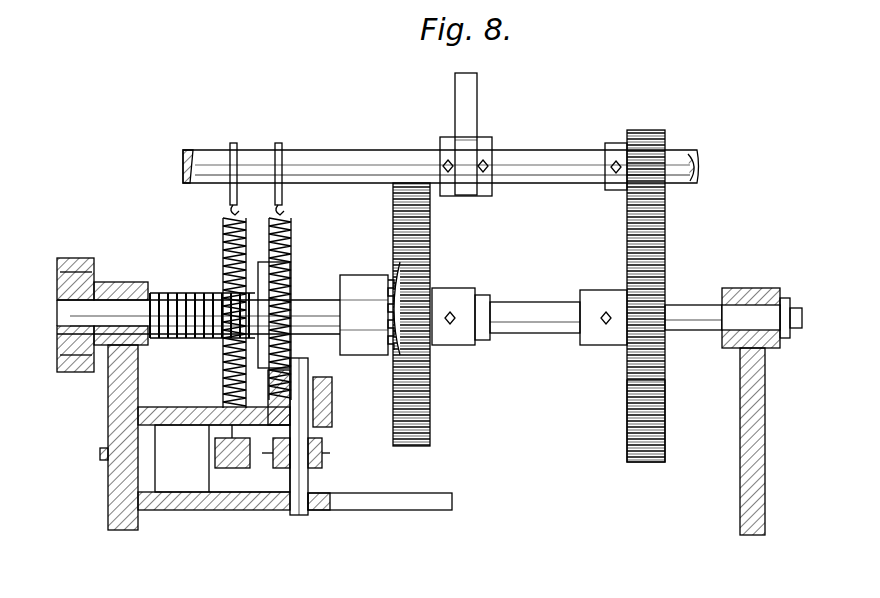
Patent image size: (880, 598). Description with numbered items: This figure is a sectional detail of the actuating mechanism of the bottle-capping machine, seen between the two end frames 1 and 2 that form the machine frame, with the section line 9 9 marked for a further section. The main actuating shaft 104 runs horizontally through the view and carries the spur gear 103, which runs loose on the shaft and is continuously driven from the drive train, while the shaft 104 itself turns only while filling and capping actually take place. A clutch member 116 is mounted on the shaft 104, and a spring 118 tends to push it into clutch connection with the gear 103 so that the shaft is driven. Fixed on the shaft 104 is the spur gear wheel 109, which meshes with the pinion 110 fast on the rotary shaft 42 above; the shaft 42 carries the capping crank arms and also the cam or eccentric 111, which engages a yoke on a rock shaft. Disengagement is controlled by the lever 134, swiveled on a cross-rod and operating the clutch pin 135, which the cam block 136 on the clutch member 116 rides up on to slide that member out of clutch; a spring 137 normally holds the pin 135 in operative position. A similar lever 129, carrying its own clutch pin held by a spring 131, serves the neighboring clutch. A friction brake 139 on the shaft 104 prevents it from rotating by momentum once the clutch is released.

The end frame 1 is at (108, 490).
The end frame 2 is at (762, 478).
The section line 9 is at (314, 259).
The rotary shaft 42 is at (540, 160).
The spur gear 103 is at (430, 400).
The shaft 104 is at (120, 300).
The spur gear wheel 109 is at (627, 420).
The pinion 110 is at (645, 132).
The cam or eccentric 111 is at (470, 80).
The clutch member 116 is at (354, 280).
The spring 118 is at (180, 300).
The lever 129 is at (230, 468).
The spring 131 is at (222, 242).
The lever 134 is at (324, 468).
The clutch pin 135 is at (310, 489).
The cam block 136 is at (284, 330).
The spring 137 is at (286, 240).
The friction brake 139 is at (78, 265).